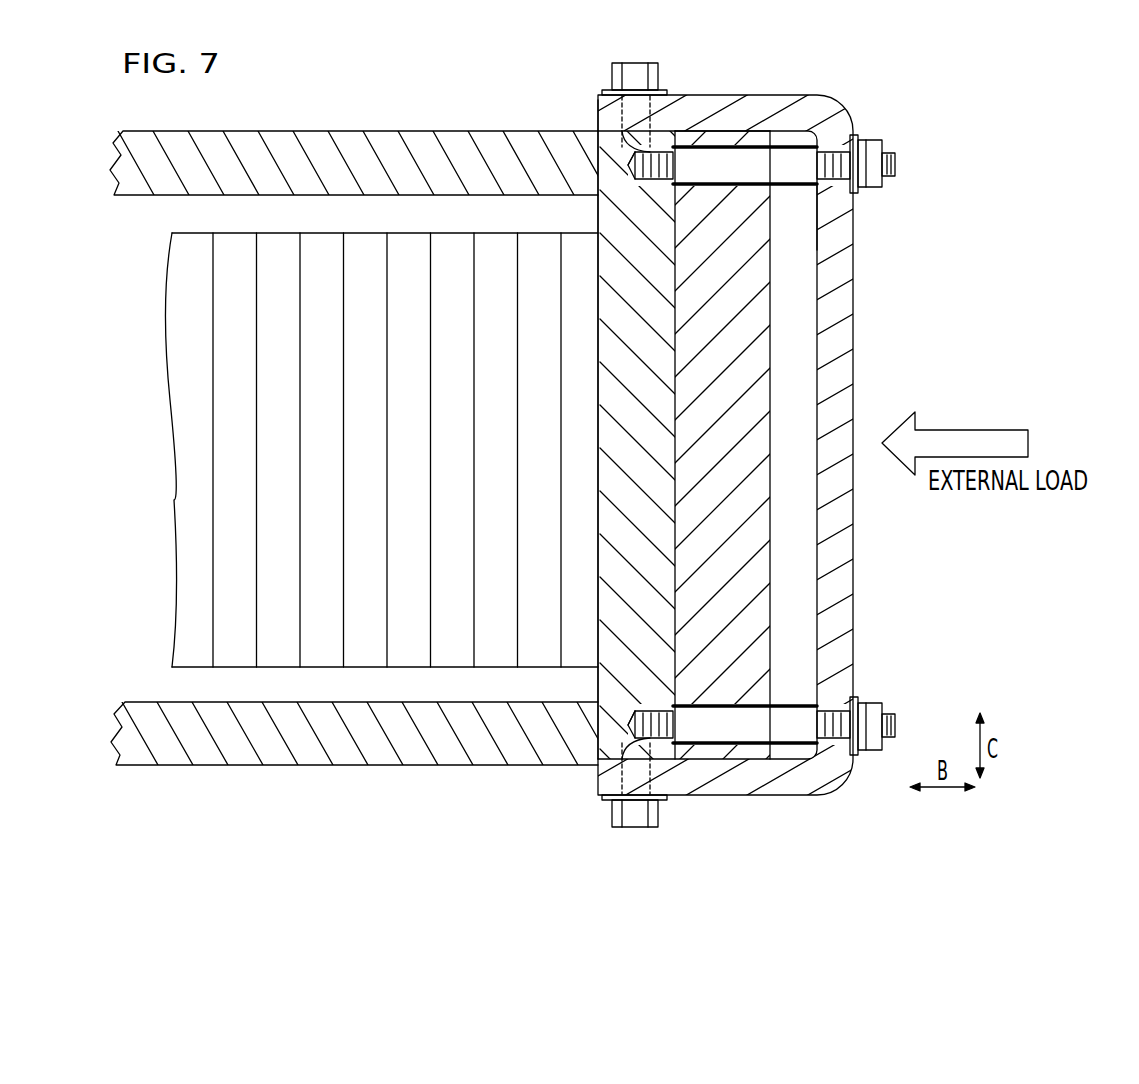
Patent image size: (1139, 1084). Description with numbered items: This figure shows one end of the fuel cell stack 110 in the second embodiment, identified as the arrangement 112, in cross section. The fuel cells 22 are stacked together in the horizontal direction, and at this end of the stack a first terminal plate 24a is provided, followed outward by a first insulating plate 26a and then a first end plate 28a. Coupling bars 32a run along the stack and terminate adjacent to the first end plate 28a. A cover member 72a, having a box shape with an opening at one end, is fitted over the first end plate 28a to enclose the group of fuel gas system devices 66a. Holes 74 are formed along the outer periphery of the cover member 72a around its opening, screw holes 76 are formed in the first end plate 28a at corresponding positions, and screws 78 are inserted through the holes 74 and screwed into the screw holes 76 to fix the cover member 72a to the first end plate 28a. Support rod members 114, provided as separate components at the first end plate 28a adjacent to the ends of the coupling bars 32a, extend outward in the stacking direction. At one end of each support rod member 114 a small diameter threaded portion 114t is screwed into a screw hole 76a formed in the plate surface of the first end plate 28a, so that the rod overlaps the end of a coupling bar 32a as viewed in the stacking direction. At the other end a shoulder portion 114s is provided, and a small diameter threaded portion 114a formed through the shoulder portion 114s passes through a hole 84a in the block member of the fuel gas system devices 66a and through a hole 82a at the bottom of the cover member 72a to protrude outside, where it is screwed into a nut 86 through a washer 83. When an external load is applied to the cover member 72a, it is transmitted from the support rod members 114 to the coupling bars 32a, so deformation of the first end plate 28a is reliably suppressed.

The fuel cell stack tightening structure 112 is at (374, 74).
The fuel cell stack 110 is at (361, 458).
The fuel cells 22 is at (381, 537).
The first terminal plate 24a is at (528, 655).
The first insulating plate 26a is at (568, 653).
The first end plate 28a is at (677, 652).
The coupling bars 32a is at (447, 131).
The group of fuel gas system devices 66a is at (772, 295).
The cover member 72a is at (833, 96).
The holes 74 is at (634, 63).
The screw holes 76 is at (598, 118).
The screw hole 76a is at (627, 168).
The screws 78 is at (614, 76).
The hole 82a is at (838, 147).
The washer 83 is at (858, 140).
The holes 84a is at (728, 140).
The nut 86 is at (882, 178).
The support rod members 114 is at (755, 424).
The small diameter threaded portion 114a is at (895, 160).
The shoulder portion 114s is at (820, 172).
The small diameter threaded portion 114t is at (673, 165).